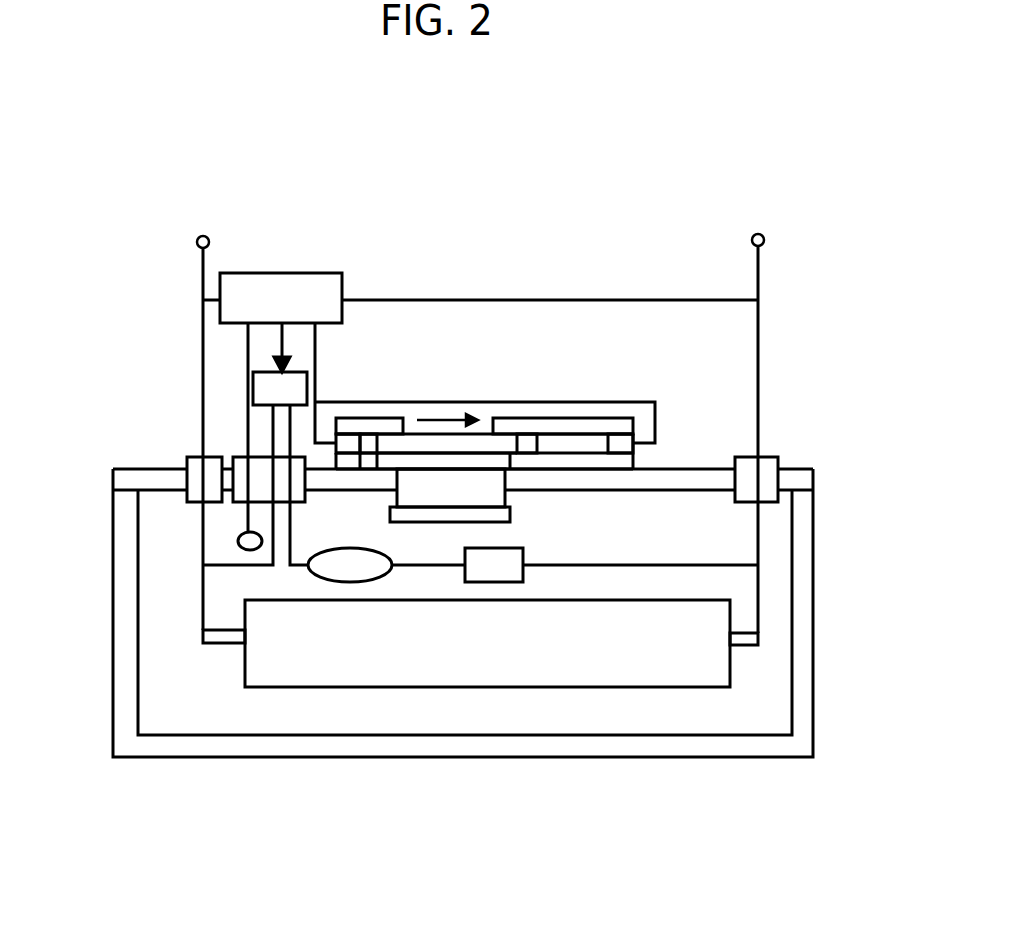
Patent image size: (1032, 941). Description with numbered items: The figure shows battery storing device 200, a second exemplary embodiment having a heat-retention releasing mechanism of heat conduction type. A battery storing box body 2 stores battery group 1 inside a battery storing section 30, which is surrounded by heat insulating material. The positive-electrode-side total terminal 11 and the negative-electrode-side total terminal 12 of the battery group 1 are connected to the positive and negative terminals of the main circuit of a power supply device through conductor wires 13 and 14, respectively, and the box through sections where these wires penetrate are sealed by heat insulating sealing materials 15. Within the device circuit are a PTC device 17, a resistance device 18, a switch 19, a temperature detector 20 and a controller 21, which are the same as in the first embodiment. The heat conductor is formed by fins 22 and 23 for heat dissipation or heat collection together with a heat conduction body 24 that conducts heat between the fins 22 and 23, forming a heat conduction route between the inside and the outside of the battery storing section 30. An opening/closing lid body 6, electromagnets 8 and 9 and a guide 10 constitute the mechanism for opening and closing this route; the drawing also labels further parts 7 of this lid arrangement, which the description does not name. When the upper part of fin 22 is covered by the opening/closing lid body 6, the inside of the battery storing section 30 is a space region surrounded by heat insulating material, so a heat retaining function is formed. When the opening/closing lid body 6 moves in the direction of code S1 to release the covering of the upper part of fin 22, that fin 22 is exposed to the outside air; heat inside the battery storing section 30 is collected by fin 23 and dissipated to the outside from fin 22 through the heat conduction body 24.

The battery storing device 200 is at (505, 170).
The battery group 1 is at (713, 615).
The battery storing box body 2 is at (813, 588).
The battery storing section 30 is at (753, 720).
The positive-electrode-side total terminal 11 is at (220, 643).
The negative-electrode-side total terminal 12 is at (742, 643).
The conductor wire 13 is at (202, 269).
The conductor wire 14 is at (758, 282).
The heat insulating sealing material 15 is at (263, 460).
The PTC device 17 is at (307, 567).
The resistance device 18 is at (510, 550).
The switch 19 is at (308, 380).
The temperature detector 20 is at (237, 540).
The controller 21 is at (317, 273).
The fin 22 is at (477, 460).
The fin 23 is at (443, 512).
The heat conduction body 24 is at (413, 492).
The opening/closing lid body 6 is at (412, 445).
The electrode 7 is at (370, 445).
The electromagnet 8 is at (347, 440).
The electromagnet 9 is at (620, 443).
The guide 10 is at (557, 428).
The direction of movement S1 is at (440, 410).